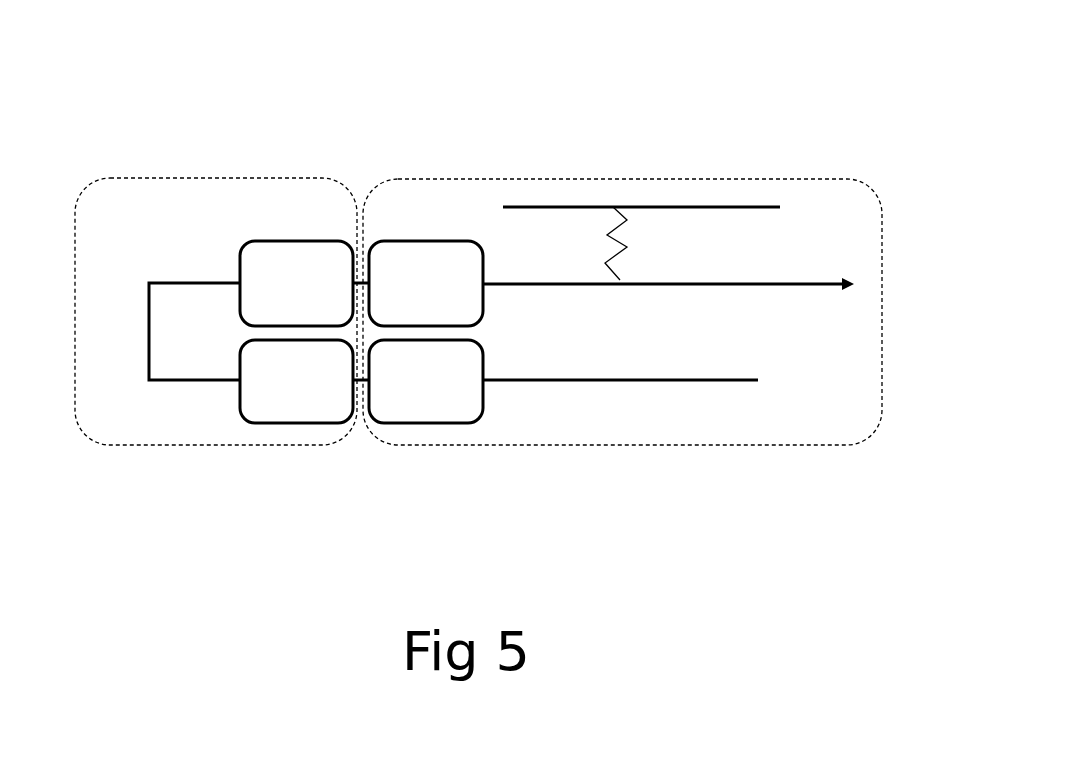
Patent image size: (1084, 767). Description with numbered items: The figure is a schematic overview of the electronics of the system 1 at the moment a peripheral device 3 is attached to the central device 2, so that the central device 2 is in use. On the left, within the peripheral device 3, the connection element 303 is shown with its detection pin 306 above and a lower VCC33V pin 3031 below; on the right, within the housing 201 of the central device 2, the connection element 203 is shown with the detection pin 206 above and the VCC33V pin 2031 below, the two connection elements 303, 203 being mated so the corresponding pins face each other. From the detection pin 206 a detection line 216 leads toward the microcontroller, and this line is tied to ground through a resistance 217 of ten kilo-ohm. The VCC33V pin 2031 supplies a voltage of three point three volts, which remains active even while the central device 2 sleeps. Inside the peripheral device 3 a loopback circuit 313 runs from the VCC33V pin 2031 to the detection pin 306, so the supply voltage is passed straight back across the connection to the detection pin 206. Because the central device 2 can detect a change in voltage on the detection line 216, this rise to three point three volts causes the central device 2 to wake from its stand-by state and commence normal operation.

The system 1 is at (788, 120).
The central device 2 is at (662, 418).
The peripheral device 3 is at (218, 193).
The housing 201 is at (797, 445).
The connection element 203 is at (503, 330).
The detection pin 206 is at (430, 253).
The detection line 216 is at (685, 282).
The resistance 217 is at (623, 242).
The connection element 303 is at (208, 353).
The detection pin 306 is at (305, 255).
The loopback circuit 313 is at (148, 338).
The VCC33V pin 2031 is at (430, 412).
The VCC33V power unit of first module 3031 is at (303, 413).